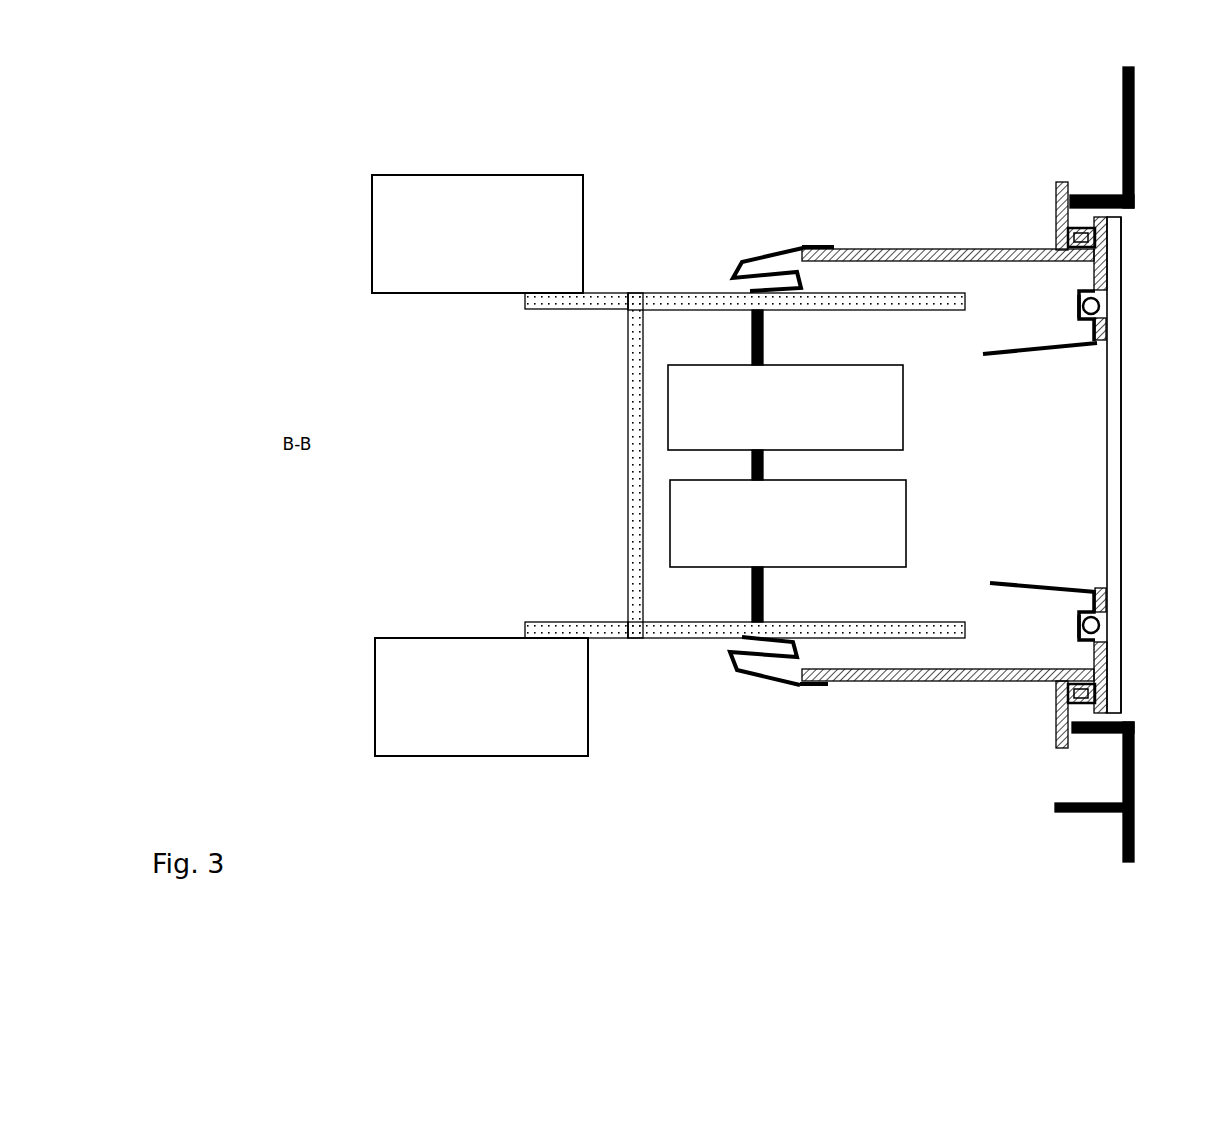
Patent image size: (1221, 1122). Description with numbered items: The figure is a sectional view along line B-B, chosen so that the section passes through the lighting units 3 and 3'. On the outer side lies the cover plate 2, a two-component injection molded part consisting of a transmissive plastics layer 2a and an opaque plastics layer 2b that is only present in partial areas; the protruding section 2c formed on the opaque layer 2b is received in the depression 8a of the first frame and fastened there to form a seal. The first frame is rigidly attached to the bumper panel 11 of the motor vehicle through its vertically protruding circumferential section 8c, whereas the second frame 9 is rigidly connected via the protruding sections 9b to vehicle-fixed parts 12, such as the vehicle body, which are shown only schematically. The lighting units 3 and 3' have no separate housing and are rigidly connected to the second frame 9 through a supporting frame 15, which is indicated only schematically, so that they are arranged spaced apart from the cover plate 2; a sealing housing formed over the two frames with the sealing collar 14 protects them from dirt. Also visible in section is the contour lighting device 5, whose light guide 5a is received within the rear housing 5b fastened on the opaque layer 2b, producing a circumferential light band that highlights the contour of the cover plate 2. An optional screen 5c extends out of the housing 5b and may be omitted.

The cover plate 2 is at (1121, 418).
The transmissive plastics layer 2a is at (1121, 498).
The opaque plastics layer 2b is at (1107, 248).
The protruding section 2c is at (1062, 228).
The lighting unit 3 is at (785, 385).
The lighting unit 3' is at (818, 523).
The contour lighting device 5 is at (1078, 292).
The light guide 5a is at (1100, 305).
The rear housing 5b is at (1078, 318).
The screen 5c is at (1030, 357).
The depression 8a is at (1057, 247).
The circumferential section 8c is at (1056, 195).
The second frame 9 is at (627, 465).
The protruding sections 9b is at (556, 309).
The bumper panel 11 is at (1134, 123).
The vehicle-fixed parts 12 is at (468, 190).
The sealing collar 14 is at (762, 682).
The supporting frame 15 is at (763, 345).